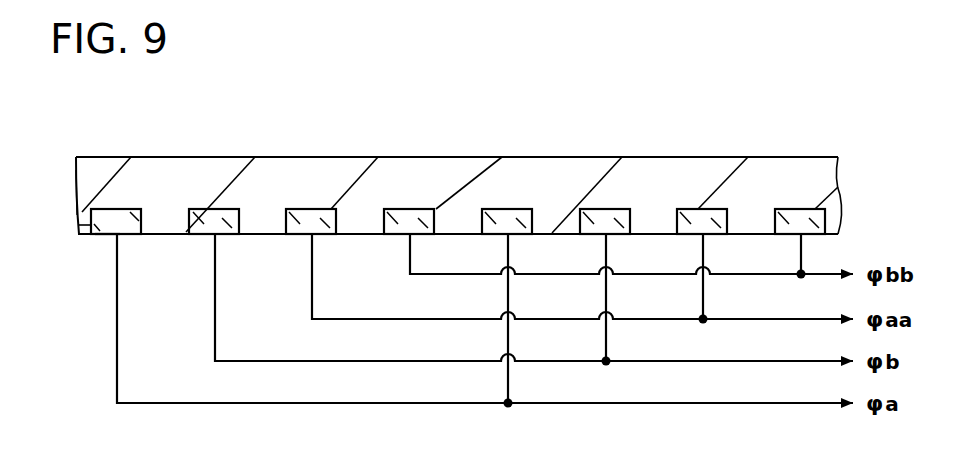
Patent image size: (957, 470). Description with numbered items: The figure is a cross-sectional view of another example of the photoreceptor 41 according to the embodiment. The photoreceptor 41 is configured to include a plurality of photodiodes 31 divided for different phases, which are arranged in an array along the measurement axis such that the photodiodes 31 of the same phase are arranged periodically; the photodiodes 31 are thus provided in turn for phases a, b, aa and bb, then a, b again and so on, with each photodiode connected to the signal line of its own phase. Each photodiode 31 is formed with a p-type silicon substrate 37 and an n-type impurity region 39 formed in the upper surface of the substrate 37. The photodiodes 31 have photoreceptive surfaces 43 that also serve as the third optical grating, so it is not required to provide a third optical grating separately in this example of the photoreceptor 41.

The photodiode 31 is at (117, 209).
The p-type silicon substrate 37 is at (82, 190).
The n-type impurity region 39 is at (80, 219).
The photoreceptor 41 is at (878, 98).
The photoreceptive surface 43 is at (106, 236).